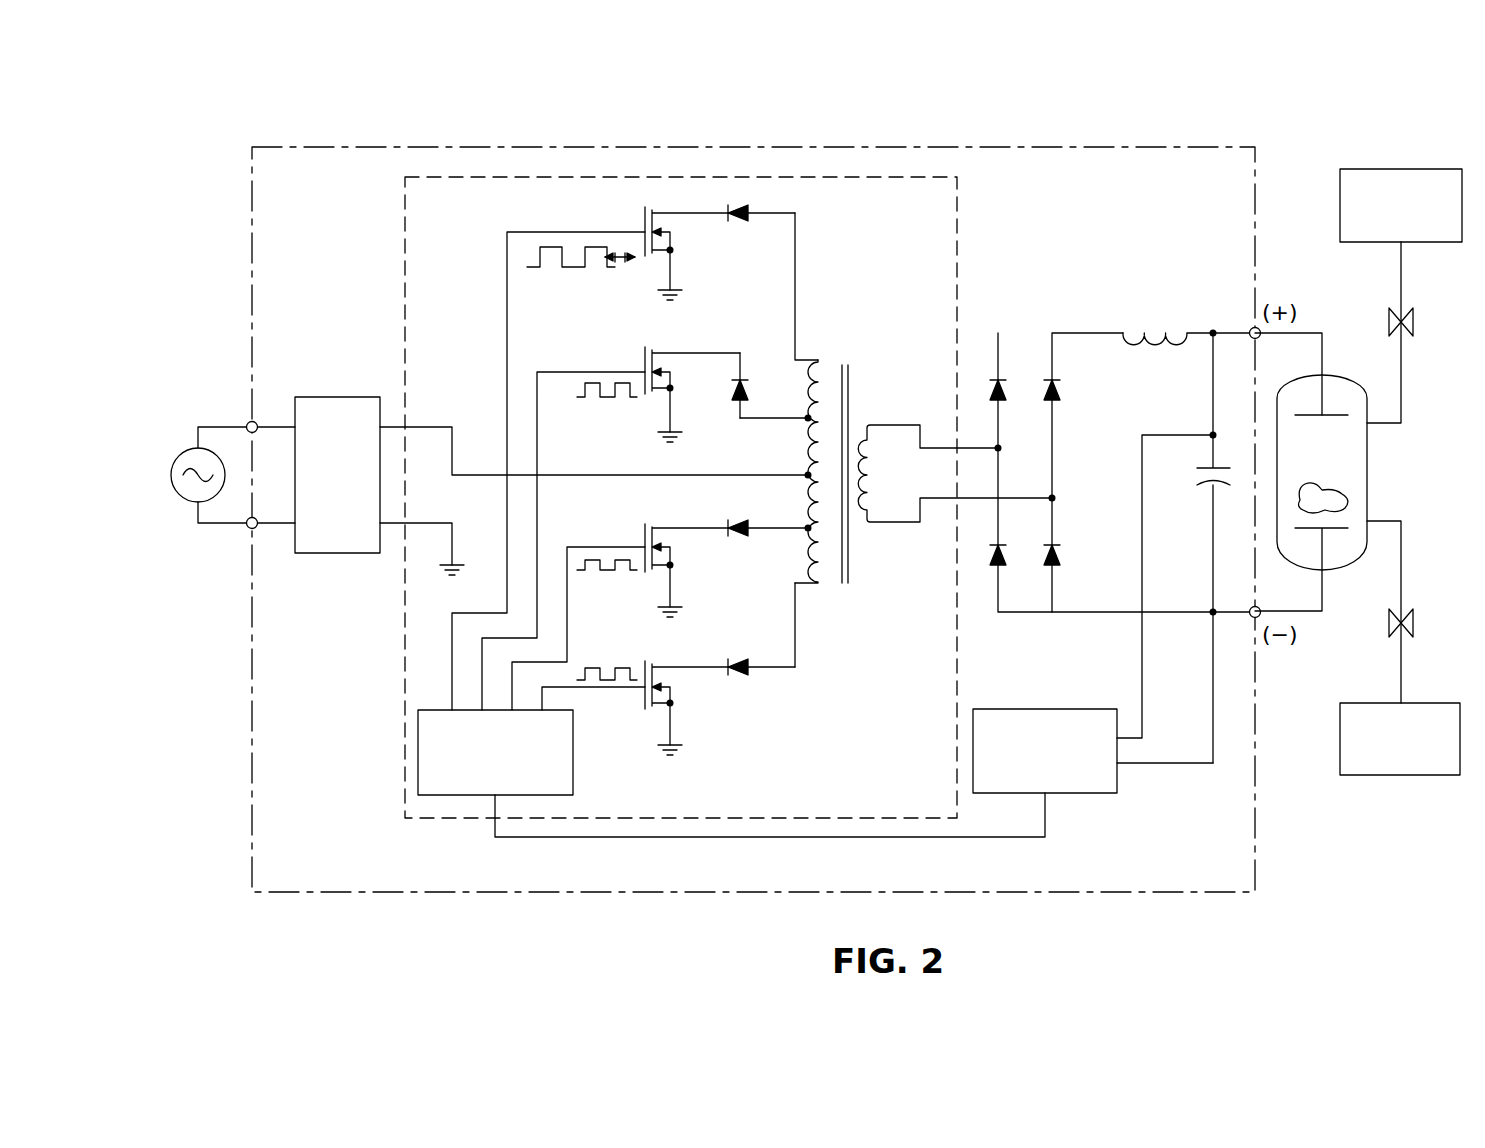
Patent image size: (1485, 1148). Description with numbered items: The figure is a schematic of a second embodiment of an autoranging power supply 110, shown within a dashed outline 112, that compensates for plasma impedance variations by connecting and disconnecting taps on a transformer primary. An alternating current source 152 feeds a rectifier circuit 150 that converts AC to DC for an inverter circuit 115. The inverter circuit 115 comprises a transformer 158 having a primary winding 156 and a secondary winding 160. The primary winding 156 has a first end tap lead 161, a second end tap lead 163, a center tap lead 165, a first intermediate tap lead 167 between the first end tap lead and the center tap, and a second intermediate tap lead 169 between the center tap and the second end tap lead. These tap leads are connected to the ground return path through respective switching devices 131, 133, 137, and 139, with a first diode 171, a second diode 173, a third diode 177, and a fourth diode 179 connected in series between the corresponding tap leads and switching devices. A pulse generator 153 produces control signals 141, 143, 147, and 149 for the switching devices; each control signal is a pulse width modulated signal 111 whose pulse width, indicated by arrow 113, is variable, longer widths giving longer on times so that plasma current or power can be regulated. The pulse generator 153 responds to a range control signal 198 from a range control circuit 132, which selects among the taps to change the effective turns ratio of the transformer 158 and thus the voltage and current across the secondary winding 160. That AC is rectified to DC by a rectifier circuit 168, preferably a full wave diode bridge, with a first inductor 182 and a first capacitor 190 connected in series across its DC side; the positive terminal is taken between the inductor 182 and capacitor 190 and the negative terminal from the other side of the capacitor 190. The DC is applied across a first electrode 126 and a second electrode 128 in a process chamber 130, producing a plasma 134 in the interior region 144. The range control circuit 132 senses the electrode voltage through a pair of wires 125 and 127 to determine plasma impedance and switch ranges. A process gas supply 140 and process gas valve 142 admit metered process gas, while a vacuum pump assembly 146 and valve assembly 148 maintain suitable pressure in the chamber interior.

The autoranging power supply 110 is at (252, 290).
The power supply 112 is at (275, 124).
The inverter circuit 115 is at (402, 270).
The rectifier circuit 150 is at (330, 396).
The alternating current source 152 is at (182, 445).
The switching device 131 is at (645, 212).
The switching device 137 is at (645, 352).
The switching device 139 is at (645, 524).
The switching device 133 is at (645, 662).
The pulse width modulated signal 111 is at (565, 270).
The arrow 113 is at (627, 268).
The control signal 141 is at (507, 324).
The control signal 147 is at (540, 428).
The control signal 149 is at (570, 597).
The control signal 143 is at (607, 692).
The first diode 171 is at (738, 213).
The third diode 177 is at (732, 392).
The fourth diode 179 is at (742, 526).
The second diode 173 is at (738, 680).
The first end tap lead 161 is at (795, 290).
The first intermediate tap lead 167 is at (770, 410).
The center tap lead 165 is at (780, 470).
The second intermediate tap lead 169 is at (790, 545).
The second end tap lead 163 is at (797, 625).
The primary winding 156 is at (816, 358).
The transformer 158 is at (852, 368).
The secondary winding 160 is at (893, 424).
The rectifier circuit 168 is at (1026, 330).
The first inductor 182 is at (1152, 355).
The first capacitor 190 is at (1210, 507).
The wire 125 is at (1140, 650).
The wire 127 is at (1165, 765).
The range control circuit 132 is at (1045, 708).
The pulse generator 153 is at (575, 765).
The range control signal 198 is at (905, 840).
The process chamber 130 is at (1370, 458).
The first electrode 126 is at (1336, 414).
The interior region 144 is at (1321, 440).
The plasma 134 is at (1350, 500).
The second electrode 128 is at (1335, 535).
The vacuum pump assembly 146 is at (1402, 168).
The valve assembly 148 is at (1413, 323).
The process gas supply 140 is at (1397, 778).
The process gas valve 142 is at (1413, 624).